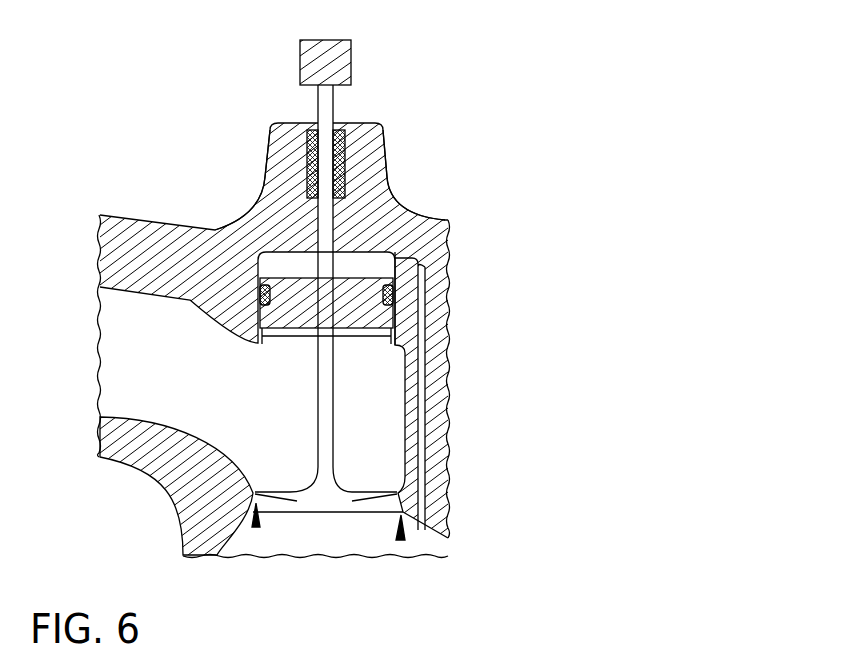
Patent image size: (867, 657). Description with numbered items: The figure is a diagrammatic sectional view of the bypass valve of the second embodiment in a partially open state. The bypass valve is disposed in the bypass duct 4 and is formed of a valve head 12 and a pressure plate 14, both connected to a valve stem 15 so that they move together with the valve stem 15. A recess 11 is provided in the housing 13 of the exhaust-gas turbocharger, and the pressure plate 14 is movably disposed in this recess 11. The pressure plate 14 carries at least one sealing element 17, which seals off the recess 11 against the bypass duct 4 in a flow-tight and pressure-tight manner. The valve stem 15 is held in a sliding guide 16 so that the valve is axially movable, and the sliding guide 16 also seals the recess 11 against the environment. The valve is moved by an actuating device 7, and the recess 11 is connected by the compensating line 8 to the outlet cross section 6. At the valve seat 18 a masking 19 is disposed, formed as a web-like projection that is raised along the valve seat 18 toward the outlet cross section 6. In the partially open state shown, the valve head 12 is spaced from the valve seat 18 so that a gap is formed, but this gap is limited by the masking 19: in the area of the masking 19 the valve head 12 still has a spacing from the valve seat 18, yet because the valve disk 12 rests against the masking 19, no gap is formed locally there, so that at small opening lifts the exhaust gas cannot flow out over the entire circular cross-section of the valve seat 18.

The bypass duct 4 is at (273, 437).
The outlet cross section 6 is at (418, 540).
The actuating device 7 is at (336, 71).
The compensating line 8 is at (420, 387).
The recess 11 is at (365, 267).
The valve head 12 is at (342, 500).
The housing 13 is at (283, 200).
The pressure plate 14 is at (287, 293).
The valve stem 15 is at (325, 170).
The sliding guide 16 is at (312, 147).
The sealing element 17 is at (265, 295).
The valve seat 18 is at (256, 505).
The masking 19 is at (401, 515).